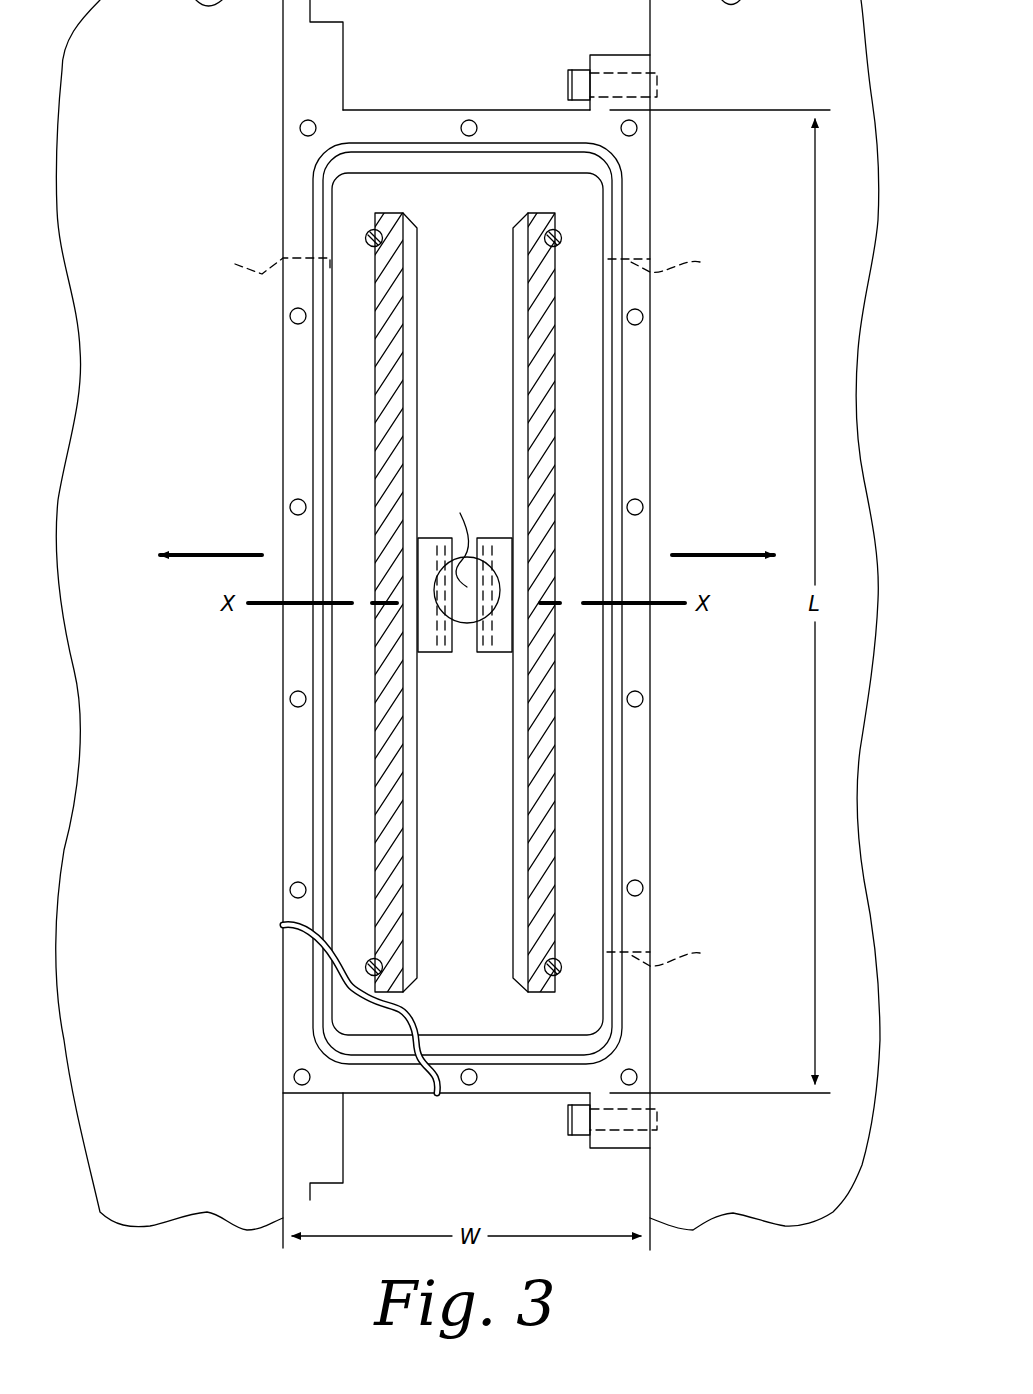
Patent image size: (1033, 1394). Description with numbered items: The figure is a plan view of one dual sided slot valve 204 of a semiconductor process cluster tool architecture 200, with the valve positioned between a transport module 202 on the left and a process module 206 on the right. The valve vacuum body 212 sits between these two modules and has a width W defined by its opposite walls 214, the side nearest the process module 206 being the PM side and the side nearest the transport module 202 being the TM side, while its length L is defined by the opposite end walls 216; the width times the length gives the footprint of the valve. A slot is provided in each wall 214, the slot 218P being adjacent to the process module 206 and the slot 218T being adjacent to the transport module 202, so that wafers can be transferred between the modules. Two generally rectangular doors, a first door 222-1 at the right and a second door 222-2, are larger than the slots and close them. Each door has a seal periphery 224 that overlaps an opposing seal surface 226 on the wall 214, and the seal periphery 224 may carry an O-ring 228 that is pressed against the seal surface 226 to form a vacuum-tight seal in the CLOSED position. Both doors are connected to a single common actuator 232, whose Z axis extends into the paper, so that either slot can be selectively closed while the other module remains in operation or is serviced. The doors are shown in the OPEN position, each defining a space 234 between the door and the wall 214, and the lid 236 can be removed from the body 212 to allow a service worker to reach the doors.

The semiconductor process cluster tool architecture 200 is at (491, 93).
The transport module 202 is at (128, 651).
The dual sided slot valve 204 is at (426, 93).
The process module 206 is at (727, 823).
The valve vacuum body 212 is at (330, 102).
The wall 214 is at (291, 342).
The end wall 216 is at (525, 120).
The slot adjacent to the transport module 218T is at (252, 264).
The slot adjacent to the process module 218P is at (685, 614).
The first door 222-1 is at (543, 905).
The second door 222-2 is at (399, 276).
The seal periphery 224 is at (366, 233).
The seal surface 226 is at (333, 248).
The O-ring 228 is at (530, 230).
The common actuator 232 is at (467, 623).
The space 234 is at (337, 790).
The lid 236 is at (300, 1017).